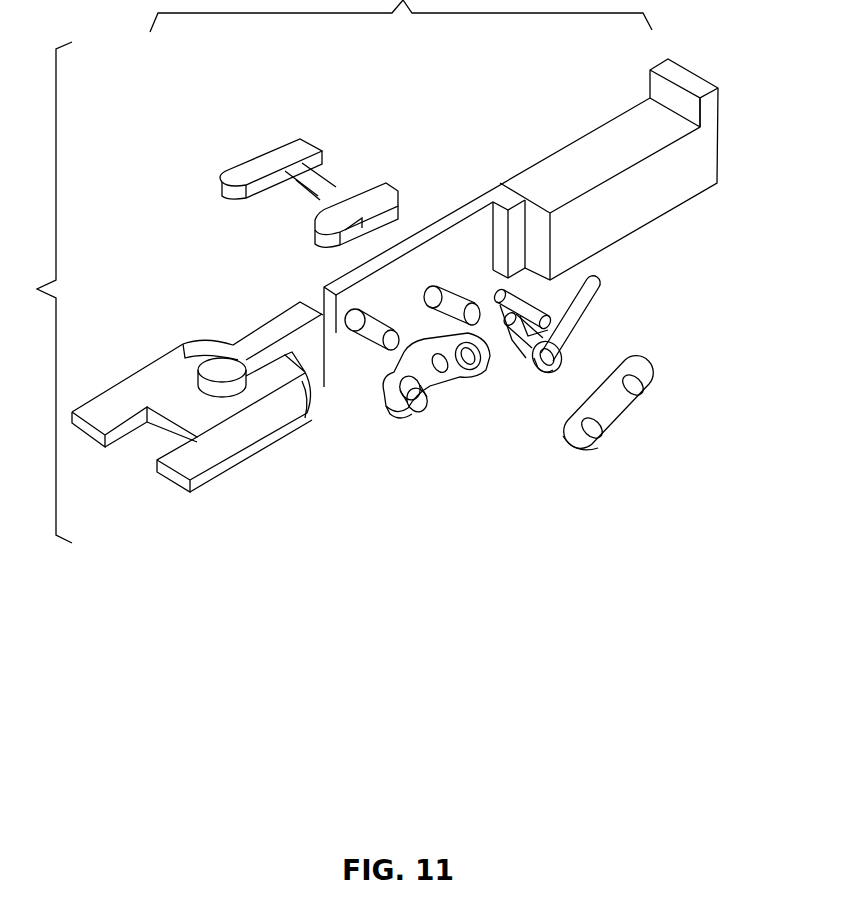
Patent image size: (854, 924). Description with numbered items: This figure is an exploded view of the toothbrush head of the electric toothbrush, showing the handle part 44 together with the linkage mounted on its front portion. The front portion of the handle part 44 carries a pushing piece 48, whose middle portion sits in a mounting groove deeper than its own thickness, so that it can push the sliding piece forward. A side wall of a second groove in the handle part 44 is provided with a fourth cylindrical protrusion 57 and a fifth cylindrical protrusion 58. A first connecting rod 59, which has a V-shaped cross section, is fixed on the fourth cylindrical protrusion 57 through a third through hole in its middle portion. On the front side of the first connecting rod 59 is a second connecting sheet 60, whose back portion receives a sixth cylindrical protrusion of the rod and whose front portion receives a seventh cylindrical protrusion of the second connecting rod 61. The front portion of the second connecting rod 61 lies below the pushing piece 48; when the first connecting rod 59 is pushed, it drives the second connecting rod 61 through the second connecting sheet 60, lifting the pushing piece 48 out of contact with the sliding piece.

The handle part 44 is at (620, 143).
The pushing piece 48 is at (258, 168).
The fourth cylindrical protrusion 57 is at (443, 310).
The fifth cylindrical protrusion 58 is at (364, 338).
The first connecting rod 59 is at (567, 329).
The second connecting sheet 60 is at (613, 407).
The second connecting rod 61 is at (452, 372).